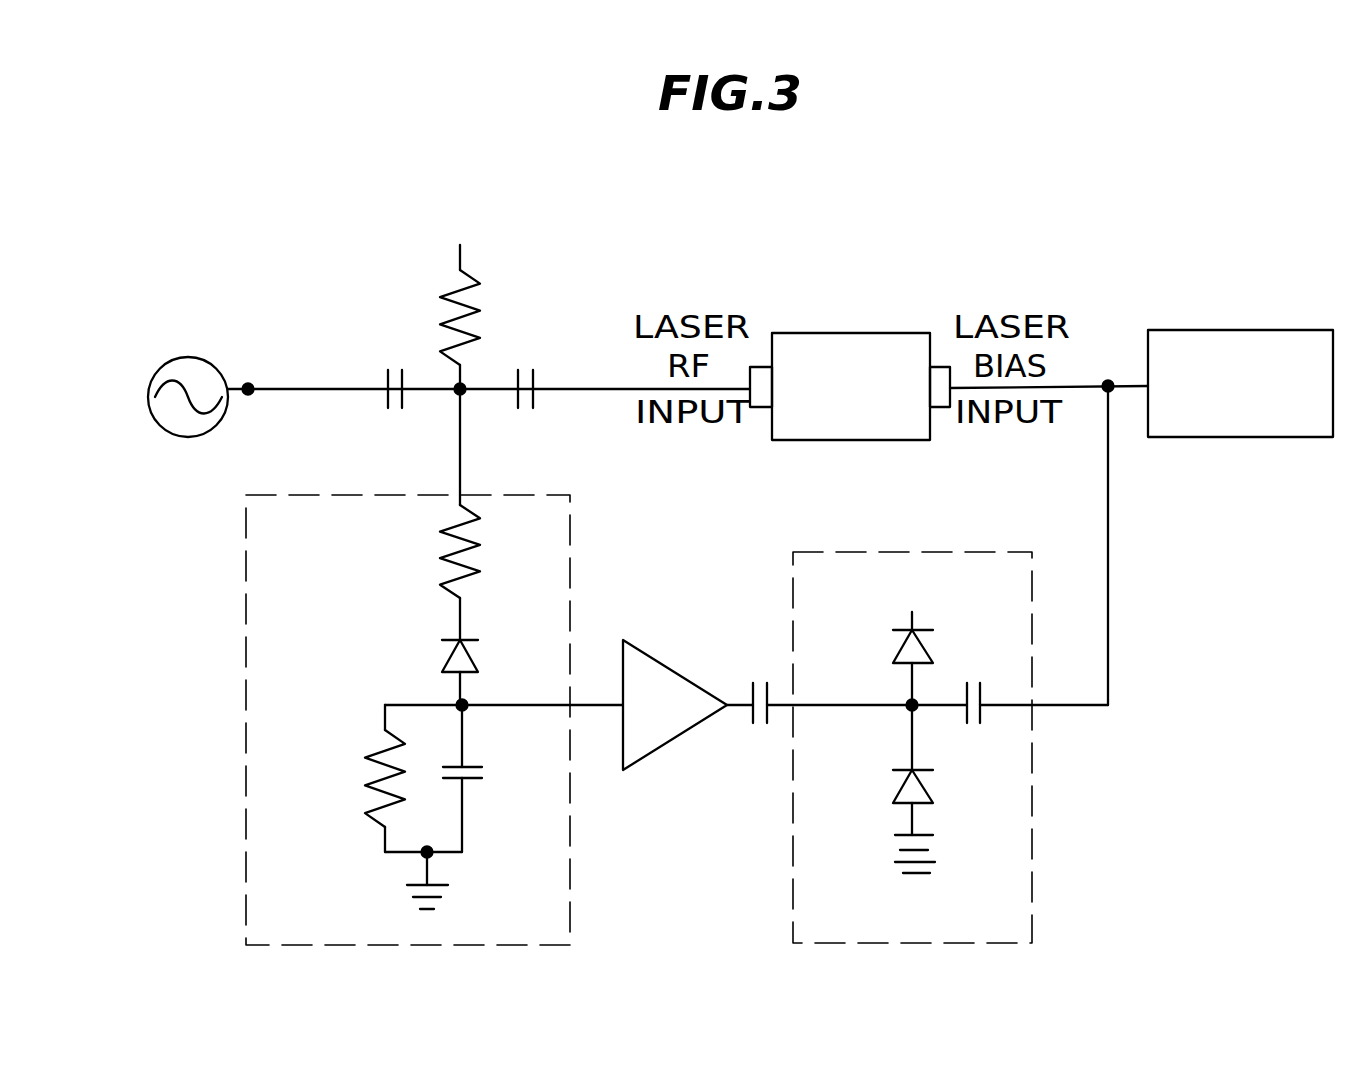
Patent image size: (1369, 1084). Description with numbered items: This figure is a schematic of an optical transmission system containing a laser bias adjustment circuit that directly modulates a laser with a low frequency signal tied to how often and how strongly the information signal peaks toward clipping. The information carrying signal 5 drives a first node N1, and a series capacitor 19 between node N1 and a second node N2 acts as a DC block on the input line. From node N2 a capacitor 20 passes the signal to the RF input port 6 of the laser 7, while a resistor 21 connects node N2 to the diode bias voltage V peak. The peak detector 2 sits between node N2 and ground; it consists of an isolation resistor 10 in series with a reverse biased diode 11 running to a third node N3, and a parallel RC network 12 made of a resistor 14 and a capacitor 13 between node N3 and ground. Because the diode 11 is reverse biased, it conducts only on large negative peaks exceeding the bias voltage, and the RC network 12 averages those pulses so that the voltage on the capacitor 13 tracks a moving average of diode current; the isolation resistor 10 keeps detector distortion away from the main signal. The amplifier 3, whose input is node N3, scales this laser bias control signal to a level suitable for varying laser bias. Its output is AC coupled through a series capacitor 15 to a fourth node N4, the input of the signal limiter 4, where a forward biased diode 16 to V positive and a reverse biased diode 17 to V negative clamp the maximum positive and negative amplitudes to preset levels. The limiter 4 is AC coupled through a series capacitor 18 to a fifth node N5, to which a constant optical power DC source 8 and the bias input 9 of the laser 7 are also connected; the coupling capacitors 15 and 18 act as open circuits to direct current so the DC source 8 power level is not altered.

The peak detector 2 is at (570, 910).
The amplifier 3 is at (645, 757).
The signal limiter 4 is at (991, 747).
The information carrying signal 5 is at (188, 358).
The RF input port 6 is at (748, 403).
The laser 7 is at (850, 333).
The DC source 8 is at (1240, 330).
The bias input 9 is at (948, 405).
The isolation resistor 10 is at (455, 577).
The reverse biased diode 11 is at (448, 638).
The parallel RC network 12 is at (459, 801).
The capacitor 13 is at (478, 780).
The resistor 14 is at (373, 815).
The series capacitor 15 is at (767, 690).
The forward biased diode 16 is at (928, 650).
The reverse biased diode 17 is at (928, 787).
The series capacitor 18 is at (982, 715).
The series capacitor 19 is at (383, 400).
The capacitor 20 is at (533, 383).
The resistor 21 is at (478, 280).
The first node N1 is at (248, 394).
The second node N2 is at (465, 393).
The third node N3 is at (460, 705).
The fourth node N4 is at (912, 705).
The fifth node N5 is at (1108, 388).